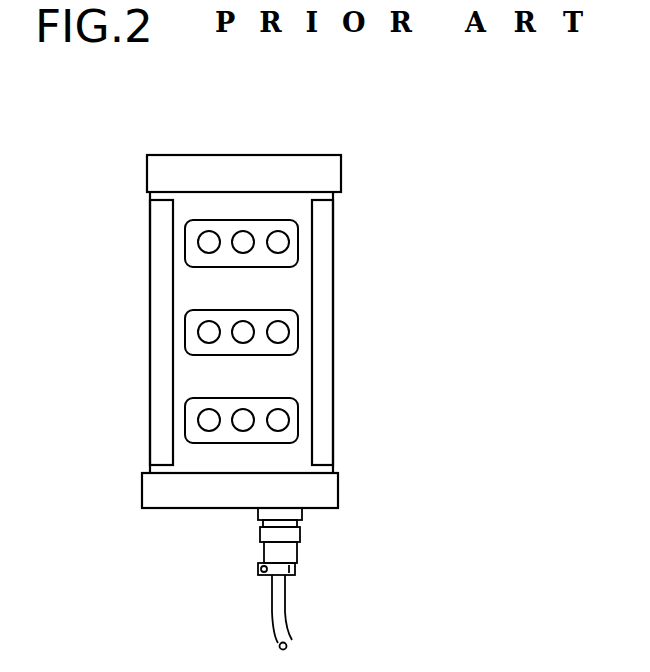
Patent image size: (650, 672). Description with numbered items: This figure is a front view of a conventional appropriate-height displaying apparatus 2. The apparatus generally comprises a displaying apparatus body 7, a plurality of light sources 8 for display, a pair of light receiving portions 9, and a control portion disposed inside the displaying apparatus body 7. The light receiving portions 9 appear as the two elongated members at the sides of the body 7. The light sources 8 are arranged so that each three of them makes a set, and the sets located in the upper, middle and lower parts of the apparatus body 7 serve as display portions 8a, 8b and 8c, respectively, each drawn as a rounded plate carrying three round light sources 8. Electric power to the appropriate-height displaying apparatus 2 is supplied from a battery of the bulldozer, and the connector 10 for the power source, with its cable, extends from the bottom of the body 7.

The appropriate-height displaying apparatus 2 is at (137, 348).
The displaying apparatus body 7 is at (259, 156).
The light sources 8 is at (208, 232).
The display portion 8a is at (188, 242).
The display portion 8b is at (188, 332).
The display portion 8c is at (190, 408).
The light receiving portions 9 is at (157, 285).
The connector 10 is at (287, 614).